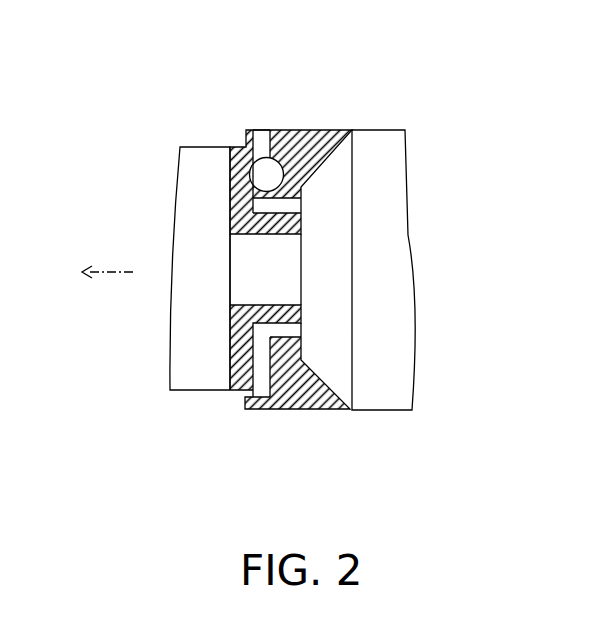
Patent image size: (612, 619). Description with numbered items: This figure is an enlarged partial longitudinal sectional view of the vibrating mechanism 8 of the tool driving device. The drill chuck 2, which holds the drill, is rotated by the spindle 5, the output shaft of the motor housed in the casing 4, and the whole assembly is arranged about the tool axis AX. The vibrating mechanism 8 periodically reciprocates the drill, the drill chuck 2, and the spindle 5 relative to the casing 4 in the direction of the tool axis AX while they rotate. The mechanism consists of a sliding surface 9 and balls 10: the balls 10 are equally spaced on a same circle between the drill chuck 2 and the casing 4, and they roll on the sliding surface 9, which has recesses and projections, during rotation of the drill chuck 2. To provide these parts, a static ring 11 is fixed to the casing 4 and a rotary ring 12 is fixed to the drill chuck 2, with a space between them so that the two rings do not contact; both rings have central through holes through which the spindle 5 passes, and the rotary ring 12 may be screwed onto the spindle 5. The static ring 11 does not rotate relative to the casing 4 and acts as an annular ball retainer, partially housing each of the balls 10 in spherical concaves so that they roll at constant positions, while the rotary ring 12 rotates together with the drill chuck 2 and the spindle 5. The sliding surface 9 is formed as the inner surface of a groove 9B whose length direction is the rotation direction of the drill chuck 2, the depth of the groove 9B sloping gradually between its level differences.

The drill chuck 2 is at (190, 392).
The casing 4 is at (388, 410).
The spindle 5 is at (243, 260).
The vibrating mechanism 8 is at (330, 129).
The sliding surface 9 is at (252, 152).
The groove 9B is at (248, 360).
The balls 10 is at (290, 130).
The static ring 11 is at (303, 410).
The rotary ring 12 is at (243, 392).
The tool axis AX is at (115, 277).